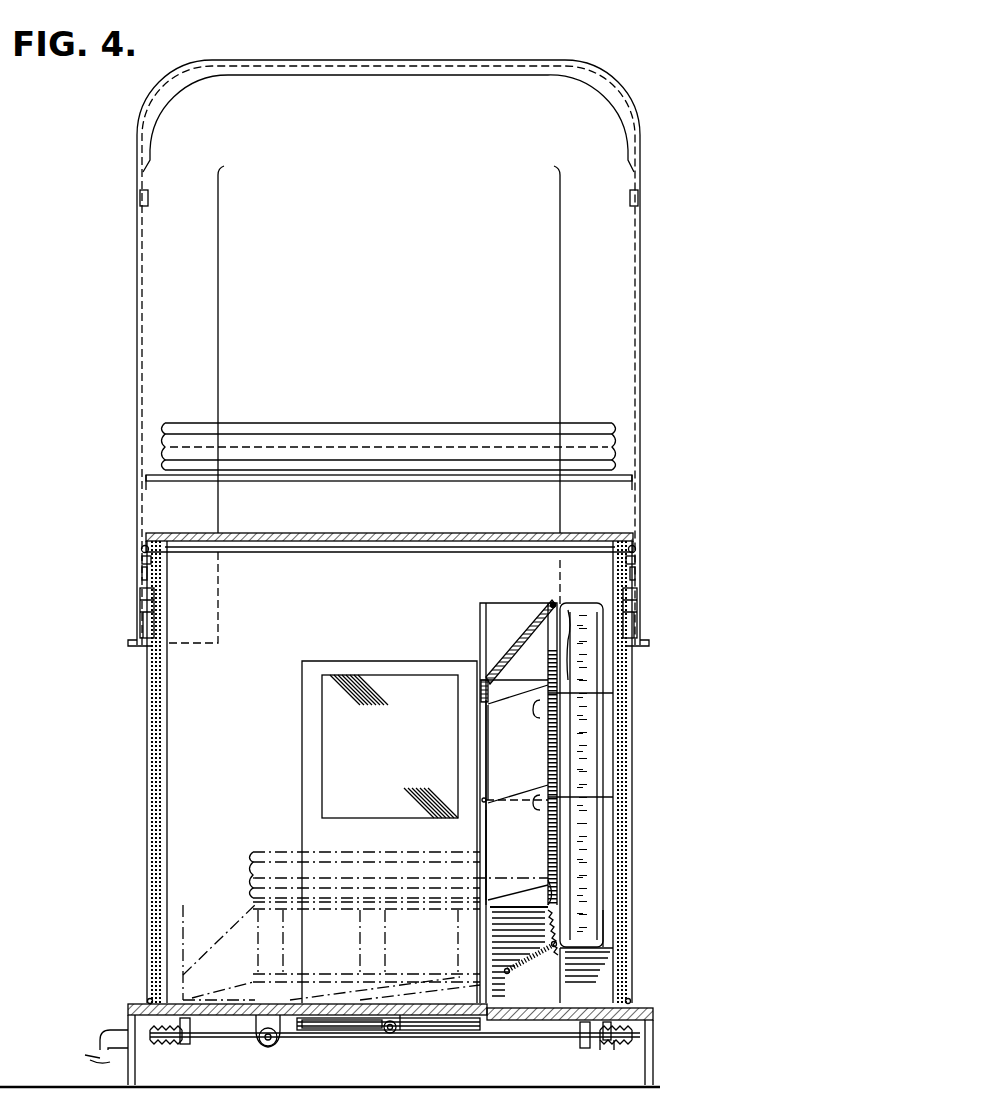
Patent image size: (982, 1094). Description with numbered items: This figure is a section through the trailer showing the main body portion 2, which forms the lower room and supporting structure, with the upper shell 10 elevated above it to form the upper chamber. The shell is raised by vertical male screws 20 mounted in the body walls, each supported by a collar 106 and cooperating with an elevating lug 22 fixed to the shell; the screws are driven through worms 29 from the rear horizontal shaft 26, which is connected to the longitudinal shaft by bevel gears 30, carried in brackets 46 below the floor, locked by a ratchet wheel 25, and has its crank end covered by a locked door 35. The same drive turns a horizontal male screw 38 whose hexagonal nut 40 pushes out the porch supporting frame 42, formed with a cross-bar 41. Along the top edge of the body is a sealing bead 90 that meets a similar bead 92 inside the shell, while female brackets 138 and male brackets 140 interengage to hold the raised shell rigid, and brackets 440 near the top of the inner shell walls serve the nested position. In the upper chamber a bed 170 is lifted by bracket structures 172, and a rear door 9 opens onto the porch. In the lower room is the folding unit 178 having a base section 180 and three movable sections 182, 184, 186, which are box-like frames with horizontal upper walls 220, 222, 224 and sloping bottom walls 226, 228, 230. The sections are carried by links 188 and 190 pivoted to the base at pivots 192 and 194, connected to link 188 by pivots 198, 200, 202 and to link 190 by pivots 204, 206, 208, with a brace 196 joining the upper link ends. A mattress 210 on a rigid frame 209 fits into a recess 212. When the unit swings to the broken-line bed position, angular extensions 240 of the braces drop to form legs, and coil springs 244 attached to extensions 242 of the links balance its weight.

The main body portion 2 is at (146, 733).
The door 9 is at (302, 691).
The upper shell 10 is at (137, 125).
The vertical male screw 20 is at (622, 719).
The elevating lug 22 is at (140, 622).
The ratchet wheel 25 is at (600, 1048).
The rear horizontal shaft 26 is at (461, 1040).
The worm 29 is at (155, 1042).
The bevel gear 30 is at (270, 1047).
The locked door 35 is at (128, 1078).
The horizontal male screw 38 is at (391, 1033).
The hexagonal nut 40 is at (400, 1004).
The cross-bar 41 is at (338, 1030).
The porch supporting frame 42 is at (368, 1018).
The bracket 46 is at (185, 1046).
The sealing bead 90 is at (143, 540).
The sealing bead 92 is at (141, 549).
The collar 106 is at (148, 1002).
The female bracket 138 is at (142, 560).
The male bracket 140 is at (142, 572).
The bed 170 is at (343, 445).
The bracket structure 172 is at (150, 484).
The folding unit 178 is at (478, 623).
The base section 180 is at (588, 966).
The movable section 182 is at (500, 838).
The movable section 184 is at (500, 745).
The movable section 186 is at (500, 620).
The link 188 is at (548, 733).
The link 190 is at (486, 718).
The pivot 192 is at (545, 892).
The pivot 194 is at (488, 985).
The brace 196 is at (512, 655).
The pivot 198 is at (548, 808).
The pivot 200 is at (529, 714).
The pivot 202 is at (554, 594).
The pivot 204 is at (400, 878).
The pivot 206 is at (482, 800).
The pivot 208 is at (483, 677).
The rigid frame 209 is at (568, 625).
The mattress 210 is at (595, 757).
The recess 212 is at (603, 935).
The upper wall 220 is at (613, 797).
The upper wall 222 is at (613, 693).
The upper wall 224 is at (514, 603).
The bottom wall 226 is at (519, 951).
The bottom wall 228 is at (512, 802).
The bottom wall 230 is at (515, 697).
The angular extension 240 is at (481, 688).
The extension 242 is at (553, 930).
The coil spring 244 is at (525, 962).
The bracket 440 is at (148, 195).